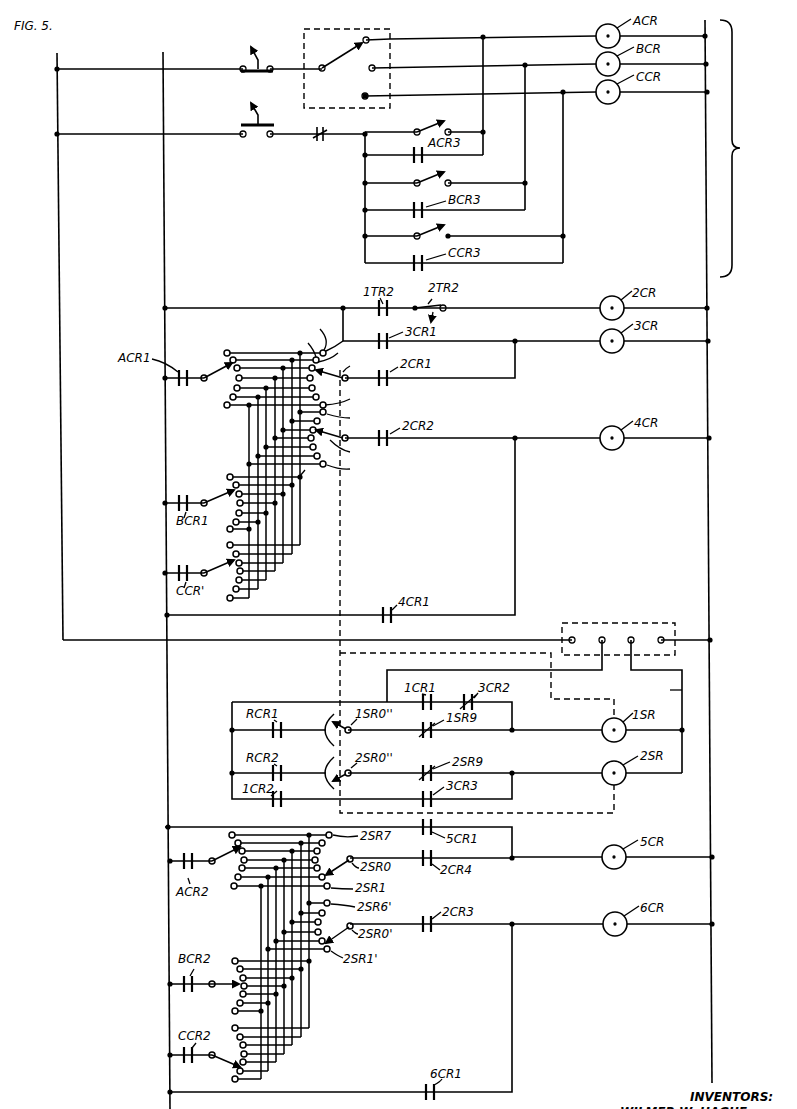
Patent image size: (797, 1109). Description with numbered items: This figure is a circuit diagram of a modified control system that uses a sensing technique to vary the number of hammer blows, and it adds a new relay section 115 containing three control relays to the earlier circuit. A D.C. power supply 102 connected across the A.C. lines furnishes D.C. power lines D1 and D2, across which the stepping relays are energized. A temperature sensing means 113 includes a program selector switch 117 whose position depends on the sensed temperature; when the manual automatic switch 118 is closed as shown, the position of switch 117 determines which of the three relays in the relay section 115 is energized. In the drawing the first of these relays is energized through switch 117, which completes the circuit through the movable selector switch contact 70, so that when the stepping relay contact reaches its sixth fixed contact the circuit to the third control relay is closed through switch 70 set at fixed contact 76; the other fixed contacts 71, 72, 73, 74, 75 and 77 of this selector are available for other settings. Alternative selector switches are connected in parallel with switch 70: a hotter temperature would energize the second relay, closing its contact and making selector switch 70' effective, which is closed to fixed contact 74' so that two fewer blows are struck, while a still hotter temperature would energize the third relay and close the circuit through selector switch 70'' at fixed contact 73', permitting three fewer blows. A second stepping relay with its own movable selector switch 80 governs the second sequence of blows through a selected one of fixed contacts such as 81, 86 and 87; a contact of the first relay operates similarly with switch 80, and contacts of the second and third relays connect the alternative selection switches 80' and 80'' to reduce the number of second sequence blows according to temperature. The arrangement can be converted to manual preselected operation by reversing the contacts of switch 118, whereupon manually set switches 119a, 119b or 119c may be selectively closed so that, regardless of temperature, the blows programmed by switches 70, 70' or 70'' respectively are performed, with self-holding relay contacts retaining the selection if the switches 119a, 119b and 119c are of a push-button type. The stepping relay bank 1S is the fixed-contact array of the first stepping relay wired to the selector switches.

The temperature sensing means 113 is at (392, 30).
The program selector switch 117 is at (340, 70).
The manual automatic switch 118 is at (246, 124).
The manually set switch 119a is at (434, 121).
The manually set switch 119b is at (443, 174).
The manually set switch 119c is at (445, 230).
The relay section 115 is at (742, 148).
The D.C. power supply 102 is at (628, 622).
The movable selector switch contact 70 is at (213, 362).
The fixed contact 71 is at (225, 407).
The fixed contact 72 is at (230, 397).
The fixed contact 73 is at (239, 386).
The fixed contact 74 is at (257, 355).
The fixed contact 75 is at (238, 365).
The fixed contact 76 is at (233, 357).
The fixed contact 77 is at (226, 350).
The selector switch 70' is at (252, 502).
The fixed contact 74' is at (223, 520).
The selector switch 70'' is at (250, 570).
The fixed contact 73' is at (218, 602).
The selector switch bank 1S is at (290, 462).
The fixed contact 86 is at (229, 836).
The movable selector switch 80 is at (253, 862).
The fixed contact 81 is at (234, 889).
The fixed contact 87 is at (238, 832).
The selection switch 80' is at (258, 986).
The selection switch 80'' is at (253, 1055).
The D.C. power line D1 is at (455, 672).
The D.C. power line D2 is at (667, 690).